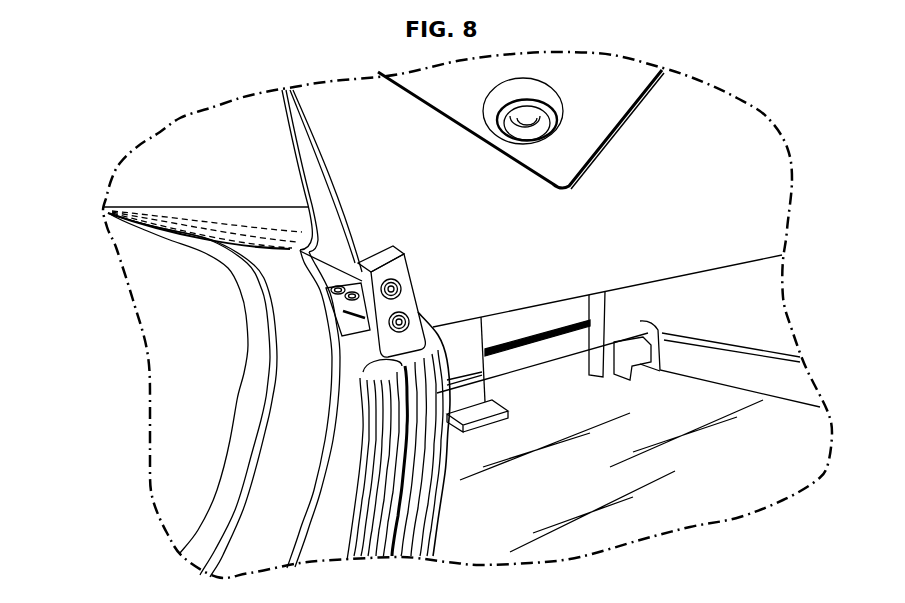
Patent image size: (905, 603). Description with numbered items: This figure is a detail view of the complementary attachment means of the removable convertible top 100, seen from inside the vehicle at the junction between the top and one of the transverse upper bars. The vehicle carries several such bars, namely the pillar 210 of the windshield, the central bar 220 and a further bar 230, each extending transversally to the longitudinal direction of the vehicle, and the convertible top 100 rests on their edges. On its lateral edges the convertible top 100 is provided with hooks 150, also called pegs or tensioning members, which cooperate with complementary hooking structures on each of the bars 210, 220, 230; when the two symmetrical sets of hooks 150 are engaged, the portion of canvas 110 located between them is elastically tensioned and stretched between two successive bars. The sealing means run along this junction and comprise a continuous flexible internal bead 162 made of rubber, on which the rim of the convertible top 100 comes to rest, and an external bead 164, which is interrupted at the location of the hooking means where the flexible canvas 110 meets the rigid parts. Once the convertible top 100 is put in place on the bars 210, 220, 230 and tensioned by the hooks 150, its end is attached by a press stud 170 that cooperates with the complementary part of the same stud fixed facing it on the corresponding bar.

The convertible top 100 is at (697, 115).
The canvas 110 is at (648, 197).
The hooks 150 is at (385, 331).
The flexible internal bead 162 is at (423, 430).
The external bead 164 is at (377, 487).
The press stud 170 is at (515, 137).
The pillar of the windshield 210 is at (297, 392).
The central bar 220 is at (189, 394).
The bar 230 is at (194, 396).